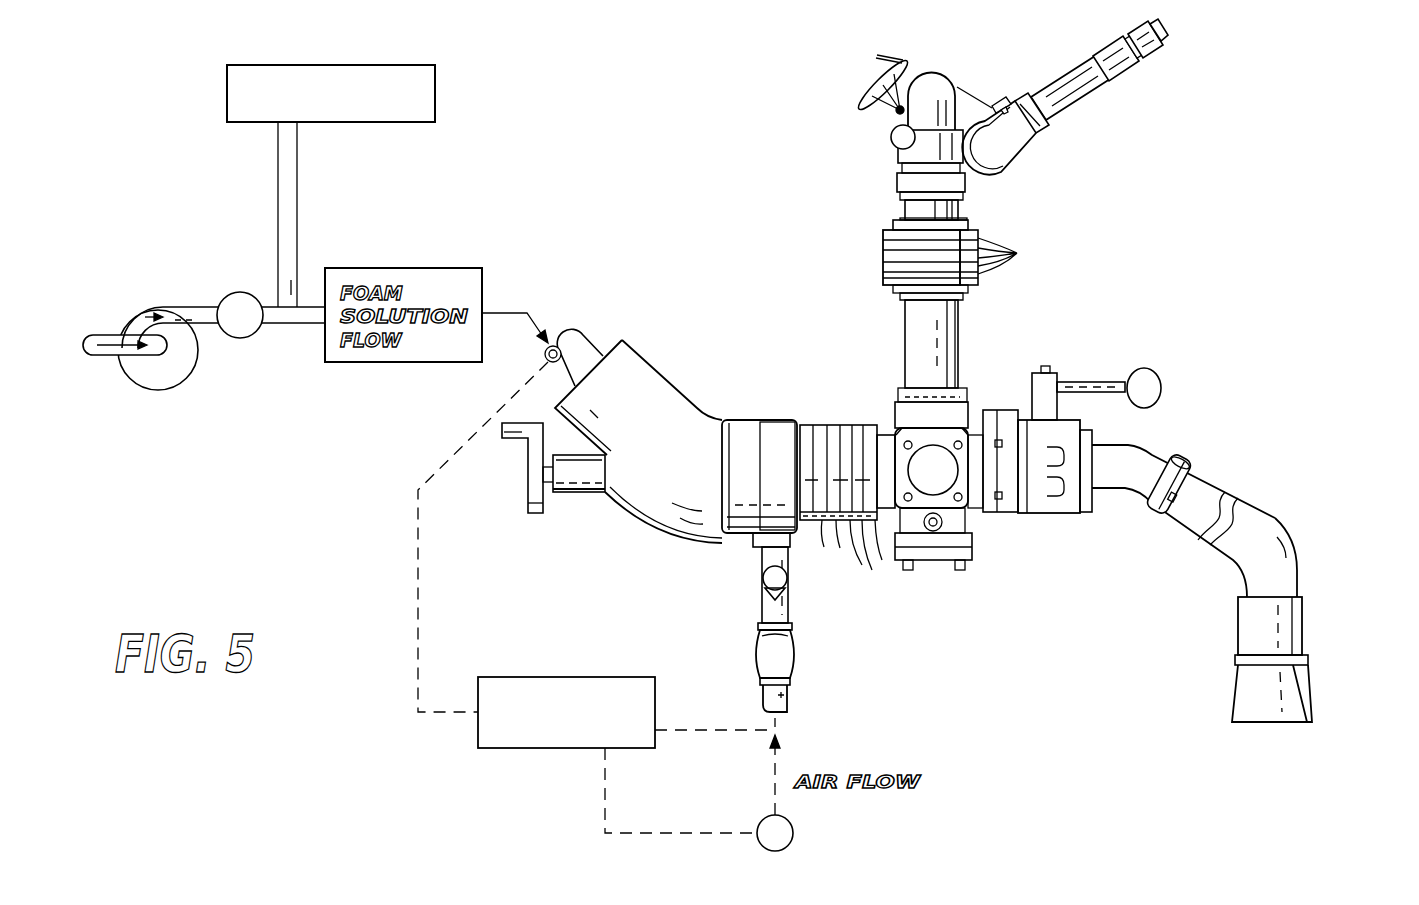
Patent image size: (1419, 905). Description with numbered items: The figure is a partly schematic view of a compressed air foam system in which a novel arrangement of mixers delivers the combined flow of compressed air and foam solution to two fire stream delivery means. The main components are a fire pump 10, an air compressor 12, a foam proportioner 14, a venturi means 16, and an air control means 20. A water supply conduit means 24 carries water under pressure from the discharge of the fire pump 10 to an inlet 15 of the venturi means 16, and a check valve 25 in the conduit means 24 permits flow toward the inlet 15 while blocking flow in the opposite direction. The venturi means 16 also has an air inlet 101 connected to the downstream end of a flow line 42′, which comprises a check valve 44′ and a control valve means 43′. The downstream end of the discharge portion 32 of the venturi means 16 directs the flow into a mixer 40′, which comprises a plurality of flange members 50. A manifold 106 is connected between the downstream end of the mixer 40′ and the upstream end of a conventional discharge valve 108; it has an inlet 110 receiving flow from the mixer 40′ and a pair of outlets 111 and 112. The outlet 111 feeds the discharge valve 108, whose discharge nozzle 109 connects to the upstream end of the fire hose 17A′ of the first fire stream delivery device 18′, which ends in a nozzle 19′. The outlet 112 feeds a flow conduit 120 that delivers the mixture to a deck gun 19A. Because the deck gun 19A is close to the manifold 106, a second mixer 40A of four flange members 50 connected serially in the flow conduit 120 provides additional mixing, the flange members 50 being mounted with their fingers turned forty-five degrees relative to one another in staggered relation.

The fire pump 10 is at (157, 382).
The air compressor 12 is at (793, 832).
The foam proportioner 14 is at (430, 98).
The inlet 15 is at (613, 340).
The venturi means 16 is at (683, 418).
The air control means 20 is at (523, 677).
The water supply conduit means 24 is at (580, 340).
The check valve 25 is at (247, 340).
The discharge portion 32 is at (800, 463).
The mixer 40′ is at (822, 405).
The second mixer 40A is at (882, 287).
The flow line 42′ is at (787, 697).
The control valve means 43′ is at (790, 658).
The check valve 44′ is at (762, 580).
The flange members 50 is at (927, 423).
The air inlet 101 is at (753, 542).
The manifold 106 is at (975, 413).
The discharge valve 108 is at (1160, 411).
The discharge nozzle 109 is at (1130, 488).
The inlet 110 is at (885, 430).
The outlet 111 is at (978, 490).
The outlet 112 is at (922, 408).
The flow conduit 120 is at (913, 332).
The fire hose 17A′ is at (1200, 492).
The first fire stream delivery device 18′ is at (1275, 514).
The nozzle 19′ is at (1293, 630).
The deck gun 19A is at (1092, 100).